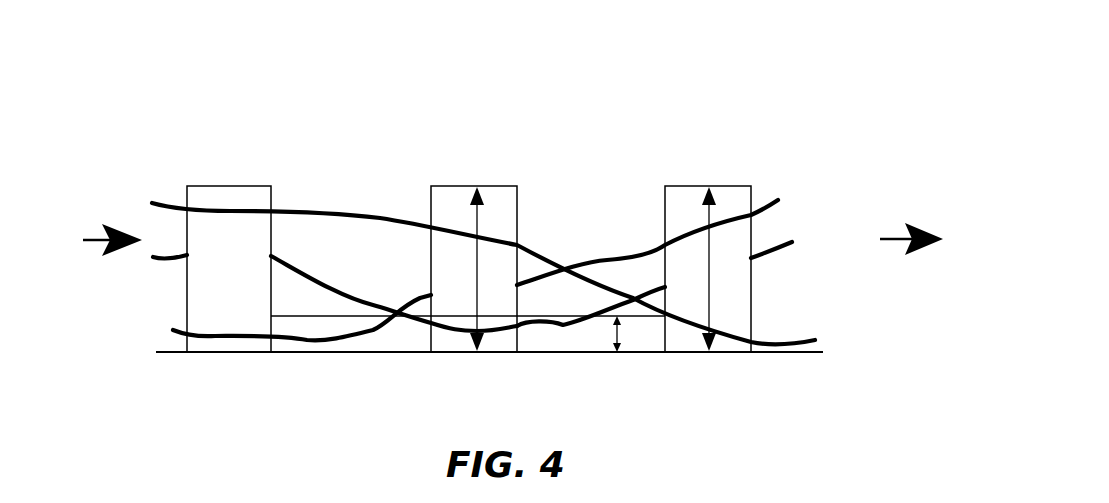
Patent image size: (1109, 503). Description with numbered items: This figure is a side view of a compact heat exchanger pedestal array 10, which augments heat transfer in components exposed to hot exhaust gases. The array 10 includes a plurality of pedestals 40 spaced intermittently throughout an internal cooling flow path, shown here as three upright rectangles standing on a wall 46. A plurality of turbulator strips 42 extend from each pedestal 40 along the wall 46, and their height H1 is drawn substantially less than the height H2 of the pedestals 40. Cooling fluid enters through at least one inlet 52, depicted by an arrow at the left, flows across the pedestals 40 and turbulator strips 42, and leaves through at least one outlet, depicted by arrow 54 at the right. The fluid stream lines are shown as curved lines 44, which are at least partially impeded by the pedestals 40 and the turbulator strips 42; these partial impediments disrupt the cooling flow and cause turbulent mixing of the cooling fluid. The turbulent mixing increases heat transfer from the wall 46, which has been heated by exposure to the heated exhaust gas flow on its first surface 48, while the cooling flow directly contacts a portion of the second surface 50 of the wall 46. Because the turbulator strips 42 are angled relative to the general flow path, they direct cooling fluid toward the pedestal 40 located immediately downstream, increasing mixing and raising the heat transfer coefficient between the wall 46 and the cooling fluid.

The compact heat exchanger pedestal array 10 is at (635, 92).
The pedestals 40 is at (225, 188).
The turbulator strips 42 is at (385, 352).
The curved lines 44 is at (763, 203).
The wall 46 is at (653, 352).
The first surface 48 is at (300, 352).
The second surface 50 is at (162, 350).
The inlet 52 is at (93, 240).
The outlet 54 is at (891, 239).
The height of the turbulator strips H1 is at (615, 334).
The height of the pedestals H2 is at (476, 232).